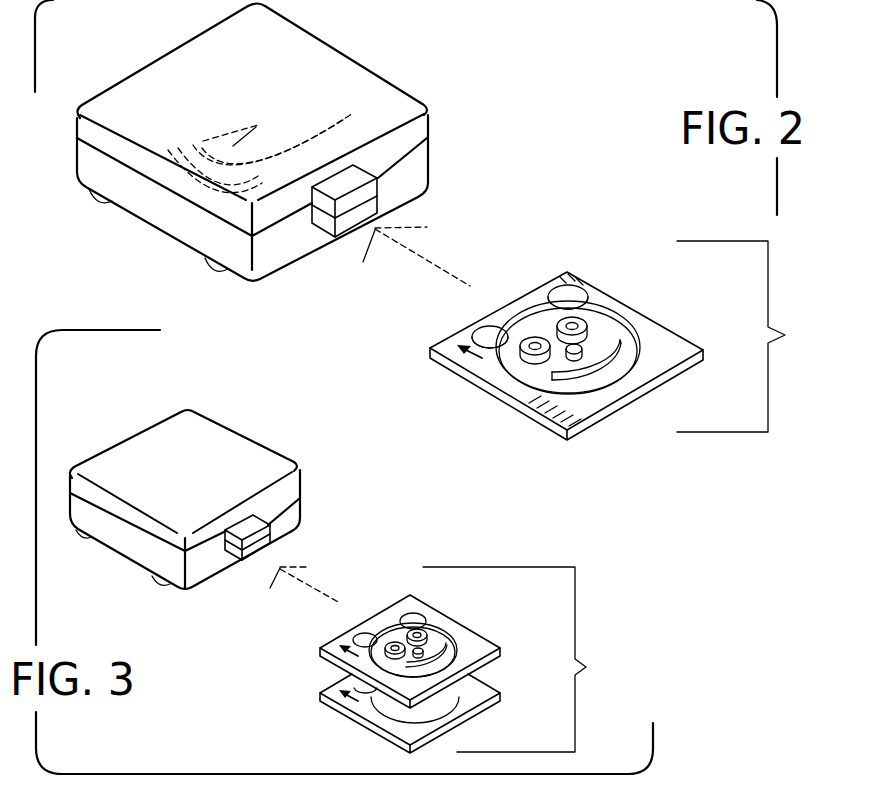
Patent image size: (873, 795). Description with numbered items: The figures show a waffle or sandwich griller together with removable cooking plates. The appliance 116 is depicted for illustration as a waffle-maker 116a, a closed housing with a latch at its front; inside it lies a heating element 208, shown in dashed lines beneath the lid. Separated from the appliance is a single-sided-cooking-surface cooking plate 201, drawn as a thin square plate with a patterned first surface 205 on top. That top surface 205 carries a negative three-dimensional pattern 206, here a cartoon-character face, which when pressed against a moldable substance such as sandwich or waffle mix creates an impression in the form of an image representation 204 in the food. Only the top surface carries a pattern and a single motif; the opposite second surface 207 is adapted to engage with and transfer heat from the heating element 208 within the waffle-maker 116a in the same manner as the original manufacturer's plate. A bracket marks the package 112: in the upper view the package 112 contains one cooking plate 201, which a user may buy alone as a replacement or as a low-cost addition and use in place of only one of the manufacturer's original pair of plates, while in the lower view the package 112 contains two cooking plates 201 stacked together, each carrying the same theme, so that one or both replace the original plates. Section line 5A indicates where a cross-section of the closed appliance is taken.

In FIG. 2, the package 112 is at (756, 336).
In FIG. 3, the package 112 is at (527, 659).
In FIG. 2, the appliance 116 is at (291, 145).
In FIG. 3, the appliance 116 is at (225, 494).
In FIG. 2, the waffle-maker 116a is at (420, 91).
In FIG. 3, the waffle-maker 116a is at (294, 460).
In FIG. 2, the single-sided-cooking-surface cooking plate 201 is at (562, 339).
In FIG. 3, the single-sided-cooking-surface cooking plate 201 is at (497, 688).
In FIG. 2, the image representation 204 is at (535, 372).
In FIG. 2, the patterned first surface 205 is at (670, 352).
In FIG. 2, the negative three-dimensional pattern 206 is at (533, 373).
In FIG. 2, the second surface 207 is at (590, 428).
In FIG. 2, the heating element 208 is at (205, 142).
In FIG. 3, the section line 5A is at (216, 367).